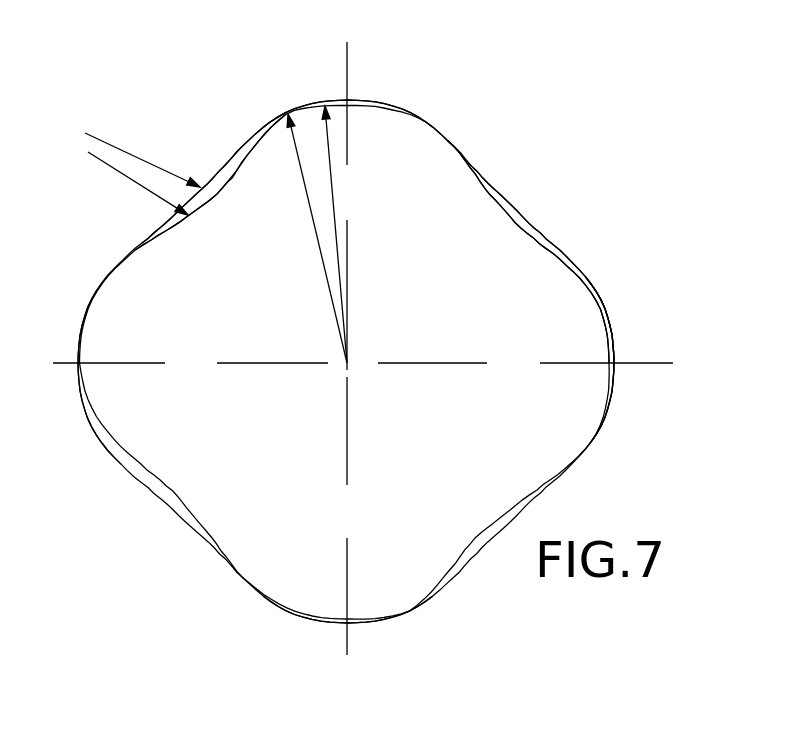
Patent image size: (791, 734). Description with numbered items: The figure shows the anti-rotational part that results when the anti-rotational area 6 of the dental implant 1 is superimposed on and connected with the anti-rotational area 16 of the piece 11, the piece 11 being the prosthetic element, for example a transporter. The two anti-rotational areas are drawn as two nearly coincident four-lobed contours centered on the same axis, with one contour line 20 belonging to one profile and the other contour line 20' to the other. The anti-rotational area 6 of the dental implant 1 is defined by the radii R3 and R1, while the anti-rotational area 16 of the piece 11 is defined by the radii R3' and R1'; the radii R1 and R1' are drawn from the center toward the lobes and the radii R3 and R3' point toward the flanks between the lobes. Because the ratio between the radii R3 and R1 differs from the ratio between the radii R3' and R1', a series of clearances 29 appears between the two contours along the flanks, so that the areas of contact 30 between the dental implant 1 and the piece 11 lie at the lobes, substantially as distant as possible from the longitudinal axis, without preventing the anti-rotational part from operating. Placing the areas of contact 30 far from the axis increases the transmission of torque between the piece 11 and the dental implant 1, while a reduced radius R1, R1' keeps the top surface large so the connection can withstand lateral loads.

The dental implant 1 is at (518, 158).
The anti-rotational area 6 is at (603, 297).
The piece 11 is at (453, 423).
The anti-rotational area 16 is at (553, 263).
The first flank curve 20 is at (213, 153).
The second flank curve 20' is at (210, 193).
The clearances 29 is at (538, 232).
The areas of contact 30 is at (443, 122).
The radius R1 is at (303, 238).
The radius R1' is at (356, 234).
The radius R3 is at (142, 134).
The radius R3' is at (132, 188).